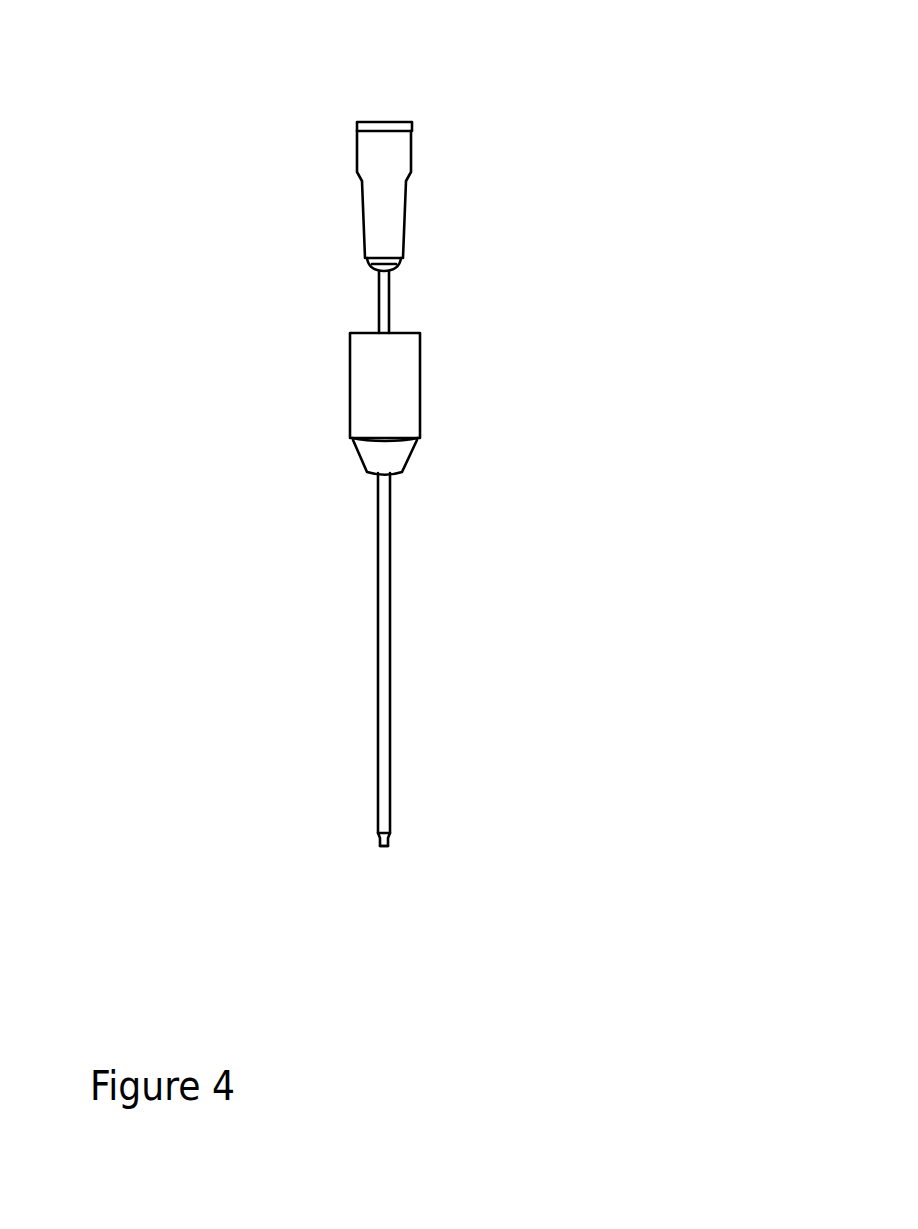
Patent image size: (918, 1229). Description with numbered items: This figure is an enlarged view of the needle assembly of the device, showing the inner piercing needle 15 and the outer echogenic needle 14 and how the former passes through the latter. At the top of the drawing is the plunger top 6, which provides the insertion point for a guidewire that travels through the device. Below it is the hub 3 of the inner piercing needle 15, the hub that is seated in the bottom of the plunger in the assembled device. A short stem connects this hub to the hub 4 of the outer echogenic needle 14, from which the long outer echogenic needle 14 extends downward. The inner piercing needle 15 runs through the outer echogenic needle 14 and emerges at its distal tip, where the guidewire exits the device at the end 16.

The plunger top 6 is at (387, 95).
The hub of inner piercing needle 3 is at (458, 187).
The hub of outer echogenic needle 4 is at (458, 380).
The outer echogenic needle 14 is at (423, 627).
The inner piercing needle 15 is at (395, 840).
The end of device 16 is at (384, 873).